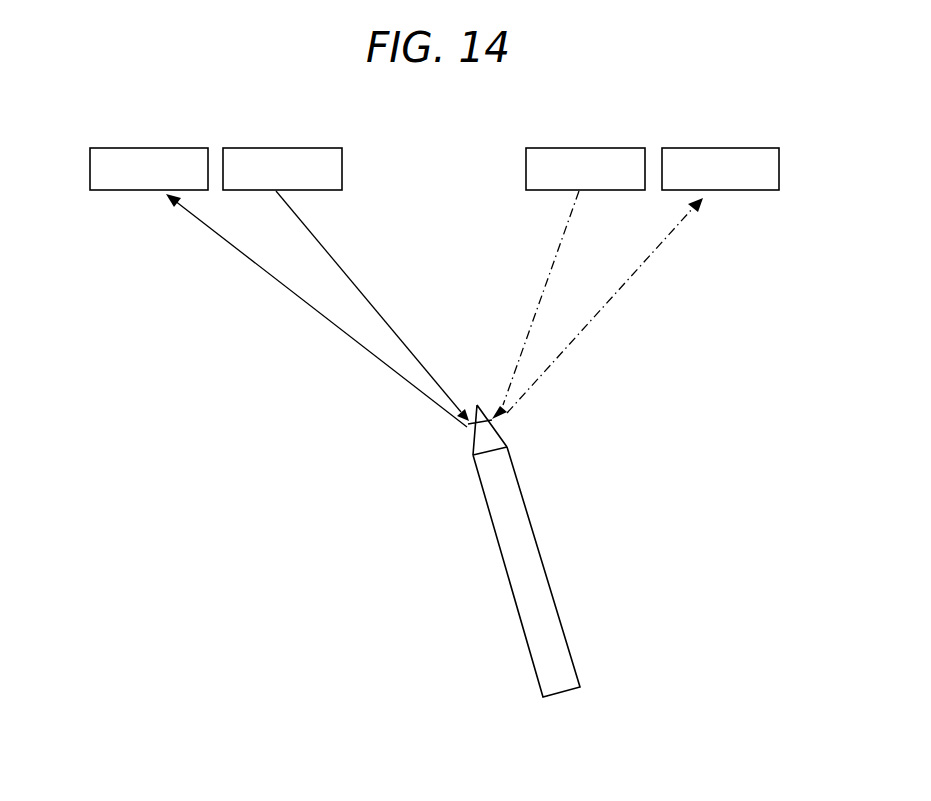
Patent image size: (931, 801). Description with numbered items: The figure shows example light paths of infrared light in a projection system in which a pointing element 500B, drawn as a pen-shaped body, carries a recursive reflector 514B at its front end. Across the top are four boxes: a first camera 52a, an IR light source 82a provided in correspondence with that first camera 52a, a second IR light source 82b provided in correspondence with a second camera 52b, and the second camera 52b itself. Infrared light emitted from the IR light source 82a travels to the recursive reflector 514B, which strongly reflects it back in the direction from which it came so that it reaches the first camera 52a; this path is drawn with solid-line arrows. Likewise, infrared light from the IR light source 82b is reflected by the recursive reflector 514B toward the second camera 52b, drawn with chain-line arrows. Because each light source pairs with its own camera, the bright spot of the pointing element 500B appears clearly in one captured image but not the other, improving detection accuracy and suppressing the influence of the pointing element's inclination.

The first camera 52a is at (140, 147).
The IR light source 82a is at (280, 147).
The IR light source 82b is at (577, 147).
The second camera 52b is at (712, 147).
The recursive reflector 514B is at (472, 447).
The pointing element 500B is at (523, 551).